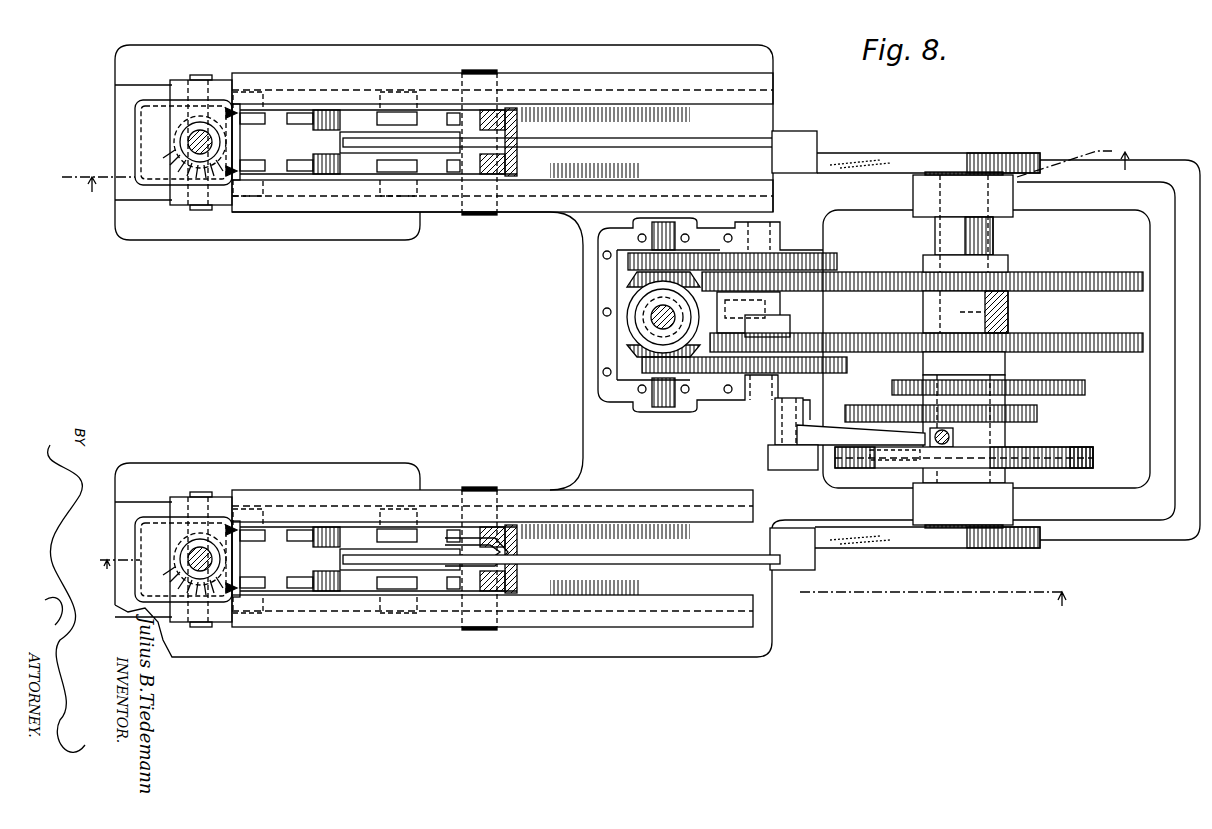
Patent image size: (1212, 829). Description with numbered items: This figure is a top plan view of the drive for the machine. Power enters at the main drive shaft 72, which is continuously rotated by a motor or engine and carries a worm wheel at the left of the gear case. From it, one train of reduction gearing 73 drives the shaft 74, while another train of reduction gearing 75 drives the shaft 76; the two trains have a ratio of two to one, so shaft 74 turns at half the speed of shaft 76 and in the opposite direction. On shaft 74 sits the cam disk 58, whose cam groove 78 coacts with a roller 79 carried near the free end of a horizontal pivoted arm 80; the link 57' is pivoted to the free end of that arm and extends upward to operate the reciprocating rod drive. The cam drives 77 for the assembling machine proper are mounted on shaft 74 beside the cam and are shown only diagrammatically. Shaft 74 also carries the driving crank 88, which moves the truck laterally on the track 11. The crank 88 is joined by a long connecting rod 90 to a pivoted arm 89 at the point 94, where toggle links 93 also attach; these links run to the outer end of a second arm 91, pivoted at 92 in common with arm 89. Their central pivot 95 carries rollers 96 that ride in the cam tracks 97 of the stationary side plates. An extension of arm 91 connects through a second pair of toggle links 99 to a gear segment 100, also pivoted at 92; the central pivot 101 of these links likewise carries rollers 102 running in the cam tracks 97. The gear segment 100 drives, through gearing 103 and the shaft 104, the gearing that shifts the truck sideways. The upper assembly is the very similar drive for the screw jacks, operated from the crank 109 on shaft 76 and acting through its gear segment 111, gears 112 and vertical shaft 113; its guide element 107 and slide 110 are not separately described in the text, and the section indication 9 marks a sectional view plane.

The section line 9- 9 is at (586, 579).
The track 11 is at (606, 166).
The link 57' is at (959, 436).
The cam disk 58 is at (1097, 462).
The main drive shaft 72 is at (645, 316).
The reduction gearing 73 is at (872, 377).
The shaft 74 is at (1010, 327).
The reduction gearing 75 is at (867, 260).
The shaft 76 is at (994, 237).
The cam drives 77 is at (1070, 416).
The cam groove 78 is at (1075, 450).
The roller 79 is at (898, 453).
The horizontal pivoted arm 80 is at (822, 451).
The driving crank 88 is at (868, 546).
The pivoted arm 89 is at (453, 540).
The connecting rod 90 is at (690, 566).
The second arm 91 is at (447, 580).
The pivot 92 is at (480, 490).
The toggle links 93 is at (402, 588).
The pivot point 94 is at (316, 527).
The central pivot 95 is at (365, 604).
The rollers 96 is at (378, 513).
The cam tracks 97 is at (642, 507).
The second pair of toggle links 99 is at (277, 530).
The gear segment 100 is at (229, 540).
The central pivot 101 is at (243, 605).
The rollers 102 is at (260, 512).
The gearing 103 is at (166, 558).
The shaft 104 is at (188, 551).
The valve rod 107 is at (425, 523).
The crank 109 is at (868, 161).
The guide rail 110 is at (580, 92).
The gear segment 111 is at (236, 108).
The gears 112 is at (177, 163).
The vertical shaft 113 is at (190, 137).